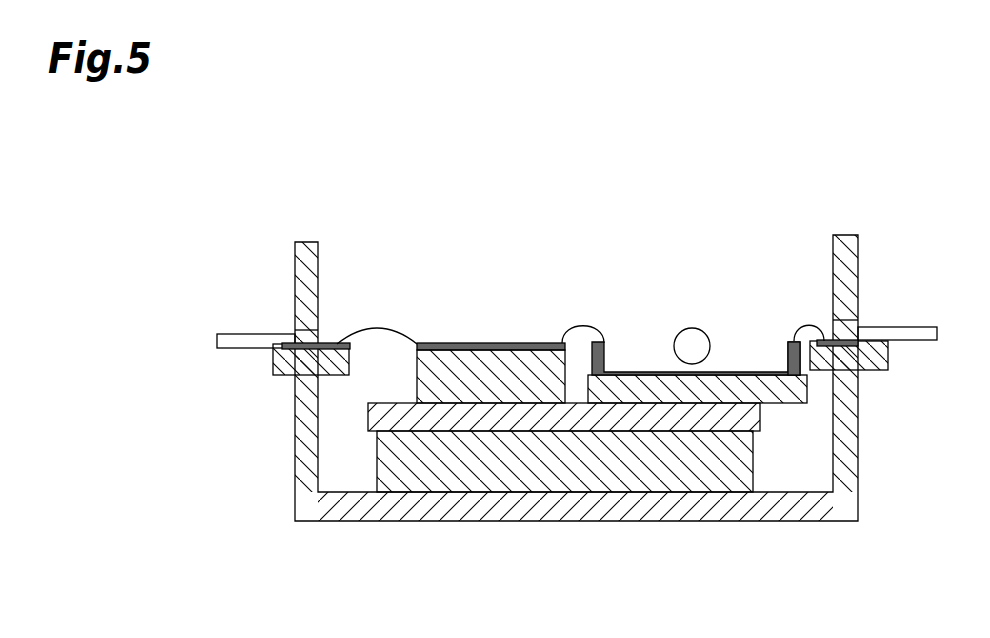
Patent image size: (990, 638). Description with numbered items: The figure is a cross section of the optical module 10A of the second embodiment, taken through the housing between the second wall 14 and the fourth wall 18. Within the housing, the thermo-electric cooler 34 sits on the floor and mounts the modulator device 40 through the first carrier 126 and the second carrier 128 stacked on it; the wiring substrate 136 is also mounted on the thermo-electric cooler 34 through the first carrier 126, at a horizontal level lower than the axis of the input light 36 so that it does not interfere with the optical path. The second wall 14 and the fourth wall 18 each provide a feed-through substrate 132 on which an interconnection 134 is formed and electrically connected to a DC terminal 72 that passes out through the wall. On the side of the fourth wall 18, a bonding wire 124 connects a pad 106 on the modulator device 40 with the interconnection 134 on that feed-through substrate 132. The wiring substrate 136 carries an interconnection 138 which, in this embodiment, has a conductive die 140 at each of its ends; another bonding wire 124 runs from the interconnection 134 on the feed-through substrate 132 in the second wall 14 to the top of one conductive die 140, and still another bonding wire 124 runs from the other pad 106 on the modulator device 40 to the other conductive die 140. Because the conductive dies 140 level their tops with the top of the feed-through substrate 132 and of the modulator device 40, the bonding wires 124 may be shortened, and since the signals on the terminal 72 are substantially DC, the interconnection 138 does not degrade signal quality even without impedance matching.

The optical module 10A is at (769, 540).
The second wall 14 is at (848, 429).
The fourth wall 18 is at (307, 433).
The thermo-electric cooler 34 is at (417, 470).
The input light 36 is at (682, 328).
The modulator device 40 is at (475, 332).
The DC terminal 72 is at (240, 336).
The pad 106 is at (425, 343).
The bonding wire 124 is at (378, 329).
The first carrier 126 is at (567, 420).
The second carrier 128 is at (427, 378).
The feed-through substrate 132 is at (283, 367).
The interconnection 134 is at (331, 343).
The wiring substrate 136 is at (783, 402).
The interconnection 138 is at (635, 372).
The conductive die 140 is at (788, 355).